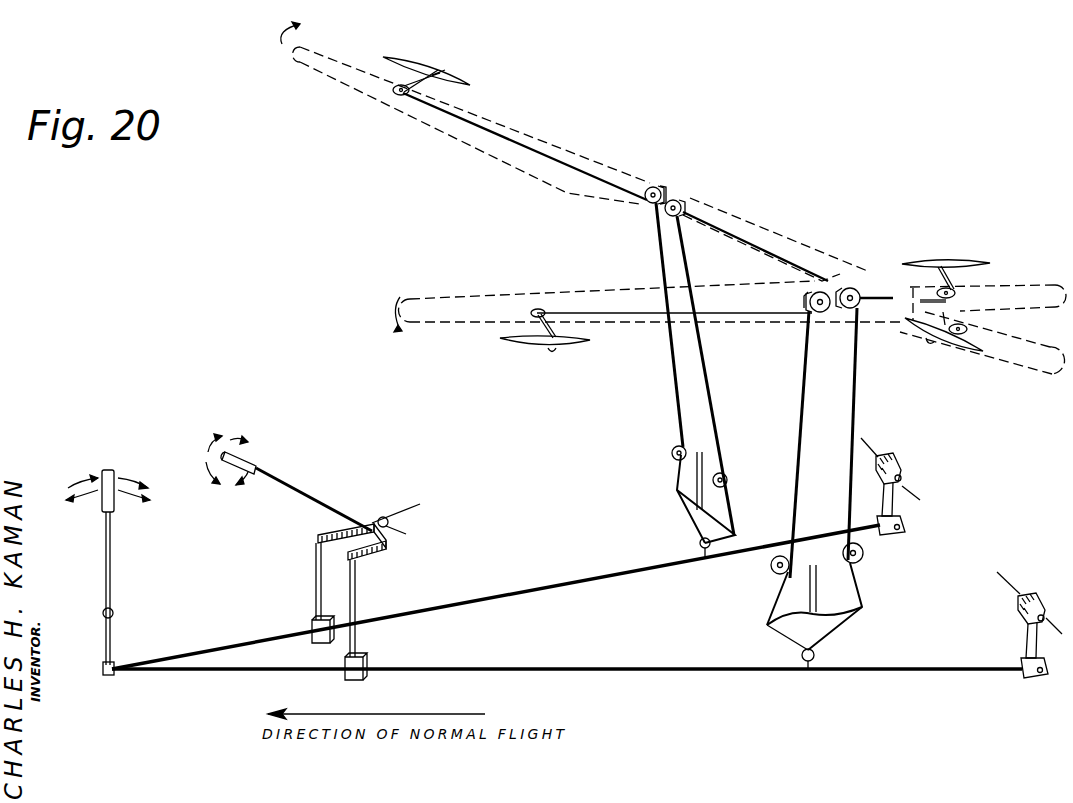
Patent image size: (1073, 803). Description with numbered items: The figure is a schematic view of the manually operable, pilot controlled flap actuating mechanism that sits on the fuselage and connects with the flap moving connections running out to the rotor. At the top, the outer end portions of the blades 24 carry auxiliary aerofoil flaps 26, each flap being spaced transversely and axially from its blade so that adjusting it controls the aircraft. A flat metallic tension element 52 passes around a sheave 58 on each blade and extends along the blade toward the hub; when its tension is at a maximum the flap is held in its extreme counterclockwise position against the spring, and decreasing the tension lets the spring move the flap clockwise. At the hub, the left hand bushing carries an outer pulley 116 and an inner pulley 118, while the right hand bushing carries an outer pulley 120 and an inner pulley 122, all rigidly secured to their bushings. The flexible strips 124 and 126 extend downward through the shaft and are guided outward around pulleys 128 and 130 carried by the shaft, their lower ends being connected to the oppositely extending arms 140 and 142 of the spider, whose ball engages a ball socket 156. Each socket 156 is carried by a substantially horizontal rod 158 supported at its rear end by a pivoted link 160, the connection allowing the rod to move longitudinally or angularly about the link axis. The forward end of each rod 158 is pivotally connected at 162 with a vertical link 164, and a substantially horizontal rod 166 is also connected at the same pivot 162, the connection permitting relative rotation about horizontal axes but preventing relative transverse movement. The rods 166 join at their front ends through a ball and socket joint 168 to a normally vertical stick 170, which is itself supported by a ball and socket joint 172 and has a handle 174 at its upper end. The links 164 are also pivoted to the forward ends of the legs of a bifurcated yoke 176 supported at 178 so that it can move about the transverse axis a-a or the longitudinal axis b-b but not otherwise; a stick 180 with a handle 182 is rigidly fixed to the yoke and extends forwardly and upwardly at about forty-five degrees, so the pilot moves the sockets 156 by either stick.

The blade 24 is at (320, 73).
The auxiliary aerofoil flap 26 is at (432, 74).
The tension element 52 is at (540, 150).
The sheave 58 is at (412, 90).
The pulley 116 is at (651, 187).
The pulley 118 is at (662, 186).
The pulley 120 is at (685, 197).
The pulley 122 is at (675, 200).
The strip 124 is at (675, 404).
The strip 126 is at (708, 416).
The pulley 128 is at (673, 460).
The pulley 130 is at (727, 476).
The arm 140 is at (683, 506).
The arm 142 is at (732, 512).
The ball socket 156 is at (700, 552).
The horizontal rod 158 is at (456, 600).
The pivoted link 160 is at (894, 512).
The pivotal connection 162 is at (320, 644).
The vertical link 164 is at (314, 582).
The horizontal rod 166 is at (224, 640).
The ball and socket joint 168 is at (110, 678).
The stick 170 is at (112, 576).
The ball and socket joint 172 is at (116, 618).
The handle 174 is at (106, 468).
The bifurcated yoke 176 is at (388, 546).
The support 178 is at (383, 516).
The stick 180 is at (318, 502).
The handle 182 is at (258, 462).